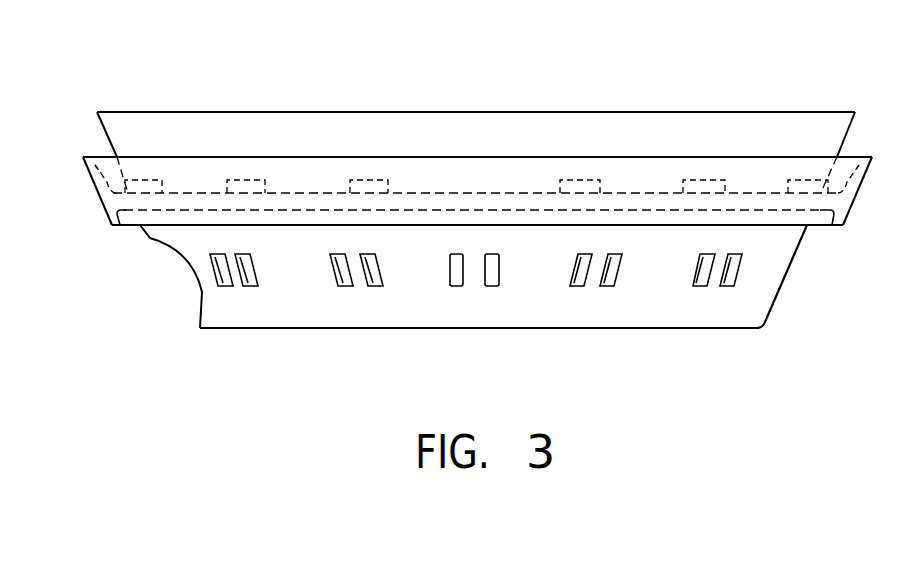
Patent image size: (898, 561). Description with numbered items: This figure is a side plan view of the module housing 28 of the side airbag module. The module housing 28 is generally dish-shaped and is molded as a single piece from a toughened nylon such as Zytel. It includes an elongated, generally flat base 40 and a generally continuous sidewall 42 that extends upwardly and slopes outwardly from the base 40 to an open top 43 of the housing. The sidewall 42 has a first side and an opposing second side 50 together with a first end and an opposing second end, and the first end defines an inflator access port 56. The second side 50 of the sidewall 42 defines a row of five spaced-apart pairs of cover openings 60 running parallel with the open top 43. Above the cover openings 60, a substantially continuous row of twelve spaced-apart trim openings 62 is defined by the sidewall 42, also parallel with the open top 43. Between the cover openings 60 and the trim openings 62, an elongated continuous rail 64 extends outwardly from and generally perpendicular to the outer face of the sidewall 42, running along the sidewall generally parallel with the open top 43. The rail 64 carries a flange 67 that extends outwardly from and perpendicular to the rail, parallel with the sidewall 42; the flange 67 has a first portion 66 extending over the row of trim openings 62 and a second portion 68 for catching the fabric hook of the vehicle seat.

The module housing 28 is at (465, 48).
The base 40 is at (467, 294).
The sidewall 42 is at (476, 129).
The open top 43 is at (607, 112).
The second side 50 is at (469, 194).
The inflator access port 56 is at (182, 257).
The cover openings 60 is at (226, 288).
The trim openings 62 is at (143, 180).
The rail 64 is at (107, 175).
The first portion 66 is at (100, 172).
The flange 67 is at (100, 190).
The second portion 68 is at (115, 224).